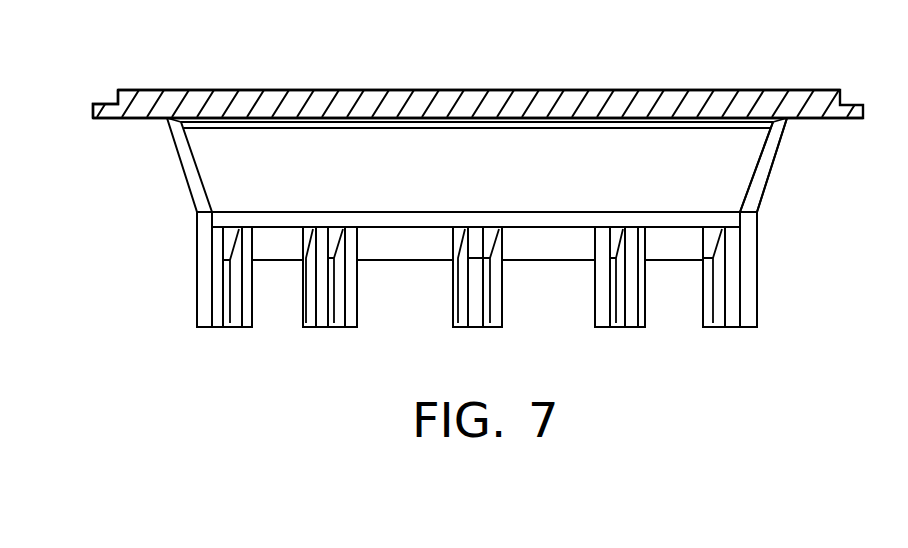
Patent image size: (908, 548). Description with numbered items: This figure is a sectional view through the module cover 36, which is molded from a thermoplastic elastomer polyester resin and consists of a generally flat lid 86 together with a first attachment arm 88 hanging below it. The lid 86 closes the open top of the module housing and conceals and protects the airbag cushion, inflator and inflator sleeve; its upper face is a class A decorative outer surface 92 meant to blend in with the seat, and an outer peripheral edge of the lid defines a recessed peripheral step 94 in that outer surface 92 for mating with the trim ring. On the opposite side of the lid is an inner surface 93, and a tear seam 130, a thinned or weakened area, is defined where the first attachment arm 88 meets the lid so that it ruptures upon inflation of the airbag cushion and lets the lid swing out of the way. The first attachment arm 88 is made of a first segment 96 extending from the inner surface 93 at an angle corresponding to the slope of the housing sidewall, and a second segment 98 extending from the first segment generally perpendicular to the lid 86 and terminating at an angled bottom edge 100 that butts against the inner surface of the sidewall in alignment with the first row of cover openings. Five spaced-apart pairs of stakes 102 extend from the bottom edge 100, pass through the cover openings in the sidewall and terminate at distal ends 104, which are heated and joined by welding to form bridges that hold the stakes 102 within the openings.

The module cover 36 is at (461, 56).
The lid 86 is at (241, 86).
The first attachment arm 88 is at (777, 173).
The outer surface 92 is at (148, 90).
The inner surface 93 is at (145, 120).
The peripheral step 94 is at (117, 102).
The first segment 96 is at (757, 150).
The second segment 98 is at (738, 217).
The angled bottom edge 100 is at (671, 237).
The stakes 102 is at (203, 303).
The distal ends 104 is at (250, 330).
The tear seam 130 is at (513, 128).